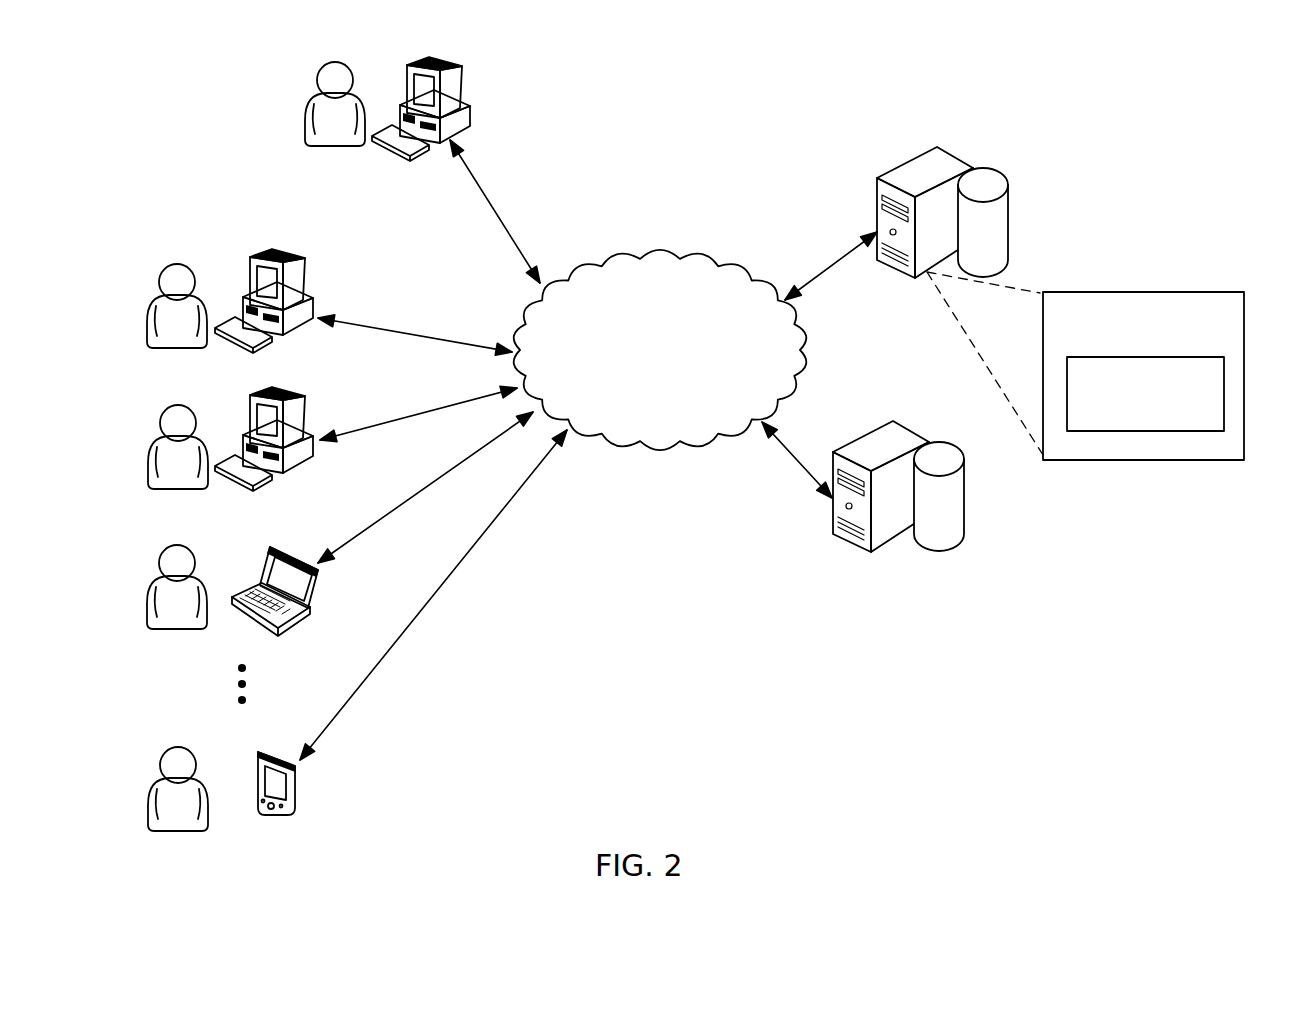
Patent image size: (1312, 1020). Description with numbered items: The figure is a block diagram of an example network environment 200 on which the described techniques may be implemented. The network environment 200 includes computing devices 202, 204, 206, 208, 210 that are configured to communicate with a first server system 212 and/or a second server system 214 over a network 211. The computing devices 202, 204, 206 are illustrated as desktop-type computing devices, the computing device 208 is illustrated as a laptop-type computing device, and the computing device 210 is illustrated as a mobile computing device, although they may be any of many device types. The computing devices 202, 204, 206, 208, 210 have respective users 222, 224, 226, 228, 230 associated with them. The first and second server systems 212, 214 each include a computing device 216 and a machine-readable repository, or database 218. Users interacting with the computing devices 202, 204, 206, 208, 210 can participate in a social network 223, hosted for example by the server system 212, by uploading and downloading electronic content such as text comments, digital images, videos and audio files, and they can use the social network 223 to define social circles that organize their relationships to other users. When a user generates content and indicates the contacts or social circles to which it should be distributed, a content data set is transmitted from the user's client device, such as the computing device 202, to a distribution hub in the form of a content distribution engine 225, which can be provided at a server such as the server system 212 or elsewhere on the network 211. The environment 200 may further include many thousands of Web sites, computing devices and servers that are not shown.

The network environment 200 is at (760, 128).
The computing device 202 is at (465, 90).
The computing device 204 is at (270, 257).
The computing device 206 is at (270, 395).
The computing device 208 is at (272, 547).
The computing device 210 is at (259, 750).
The network 211 is at (674, 254).
The first server system 212 is at (887, 282).
The second server system 214 is at (843, 556).
The computing device 216 is at (955, 165).
The database 218 is at (1010, 218).
The user 222 is at (315, 97).
The social network 223 is at (1235, 325).
The user 224 is at (185, 263).
The content distribution engine 225 is at (1147, 431).
The user 226 is at (187, 406).
The user 228 is at (190, 549).
The user 230 is at (191, 750).